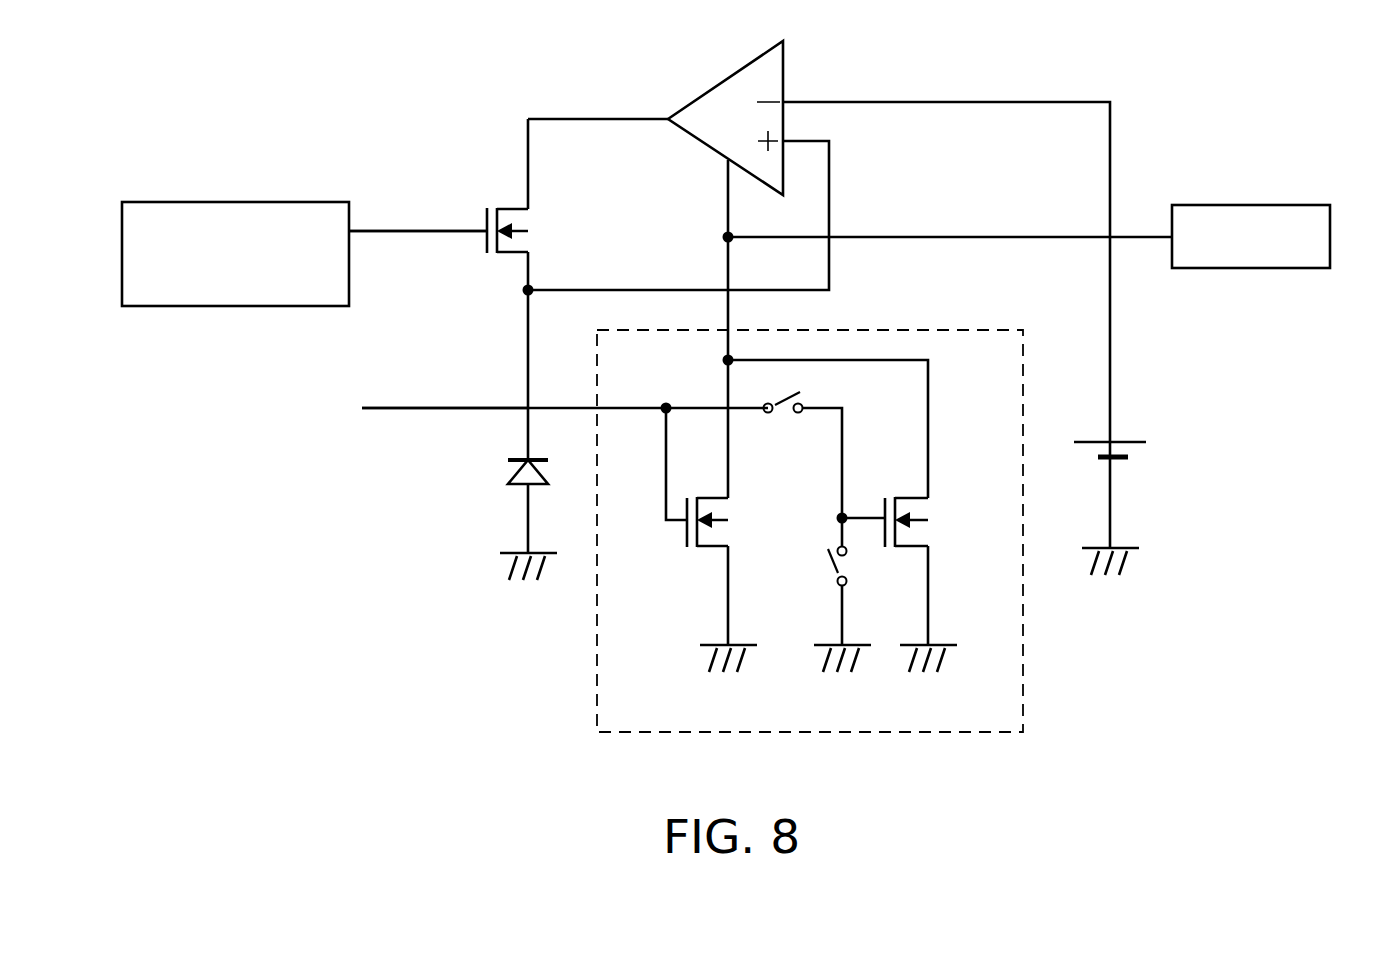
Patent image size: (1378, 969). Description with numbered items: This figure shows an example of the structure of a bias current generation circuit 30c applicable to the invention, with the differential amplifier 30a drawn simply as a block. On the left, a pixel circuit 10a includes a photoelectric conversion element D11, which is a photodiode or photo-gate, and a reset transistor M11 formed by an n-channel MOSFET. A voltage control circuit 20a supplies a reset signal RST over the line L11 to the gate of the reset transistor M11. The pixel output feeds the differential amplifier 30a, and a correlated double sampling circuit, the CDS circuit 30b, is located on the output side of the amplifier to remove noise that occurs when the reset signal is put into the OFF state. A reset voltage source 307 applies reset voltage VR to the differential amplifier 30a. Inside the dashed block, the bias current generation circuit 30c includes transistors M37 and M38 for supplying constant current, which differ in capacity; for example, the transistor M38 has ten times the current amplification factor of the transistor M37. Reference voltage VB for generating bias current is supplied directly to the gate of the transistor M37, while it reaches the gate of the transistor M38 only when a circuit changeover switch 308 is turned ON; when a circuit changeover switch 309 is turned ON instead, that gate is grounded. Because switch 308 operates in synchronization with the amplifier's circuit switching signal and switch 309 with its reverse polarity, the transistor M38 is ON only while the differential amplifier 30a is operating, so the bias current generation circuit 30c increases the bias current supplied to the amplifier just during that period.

The pixel circuit 10a is at (474, 110).
The voltage control circuit 20a is at (290, 202).
The differential amplifier 30a is at (729, 82).
The CDS circuit 30b is at (1283, 204).
The bias current generation circuit 30c is at (1023, 645).
The reset voltage source 307 is at (1133, 467).
The circuit changeover switch 308 is at (788, 417).
The circuit changeover switch 309 is at (830, 573).
The reset transistor M11 is at (508, 258).
The reset signal line RST L11 is at (433, 233).
The reset signal RST is at (441, 215).
The photoelectric conversion element D11 is at (500, 473).
The reference voltage VB is at (422, 408).
The transistor M37 is at (678, 532).
The transistor M38 is at (932, 533).
The reset voltage VR is at (1149, 450).